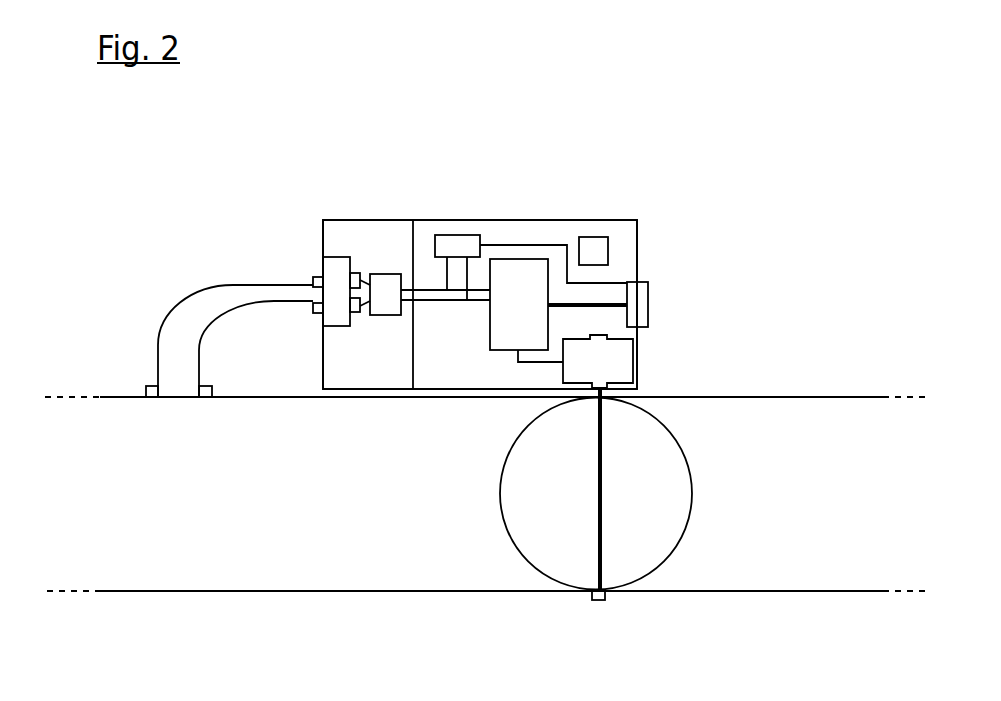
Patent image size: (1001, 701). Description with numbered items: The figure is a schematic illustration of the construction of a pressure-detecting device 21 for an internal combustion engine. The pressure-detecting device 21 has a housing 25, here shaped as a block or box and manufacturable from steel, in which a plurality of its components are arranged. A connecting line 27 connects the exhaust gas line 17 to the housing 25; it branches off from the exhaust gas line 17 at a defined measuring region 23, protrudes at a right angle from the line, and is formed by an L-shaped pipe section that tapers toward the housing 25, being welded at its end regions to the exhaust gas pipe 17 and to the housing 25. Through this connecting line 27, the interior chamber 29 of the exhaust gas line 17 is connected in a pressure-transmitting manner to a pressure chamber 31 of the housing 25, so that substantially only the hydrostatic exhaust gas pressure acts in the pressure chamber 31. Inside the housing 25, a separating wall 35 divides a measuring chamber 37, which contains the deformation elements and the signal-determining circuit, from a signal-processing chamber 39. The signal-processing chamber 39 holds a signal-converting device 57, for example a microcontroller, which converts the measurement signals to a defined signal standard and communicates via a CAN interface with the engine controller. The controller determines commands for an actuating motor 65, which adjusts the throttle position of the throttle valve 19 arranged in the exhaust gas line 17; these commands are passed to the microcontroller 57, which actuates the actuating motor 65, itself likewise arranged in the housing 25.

The exhaust gas line 17 is at (180, 592).
The throttle element 19 is at (687, 460).
The pressure-detecting device 21 is at (713, 192).
The defined measuring region 23 is at (117, 340).
The housing 25 is at (523, 220).
The connecting line 27 is at (197, 317).
The interior chamber 29 is at (208, 491).
The pressure chamber 31 is at (340, 307).
The separating wall 35 is at (415, 242).
The measuring chamber 37 is at (340, 238).
The signal-processing chamber 39 is at (568, 238).
The signal-converting device 57 is at (505, 328).
The actuating motor 65 is at (625, 363).